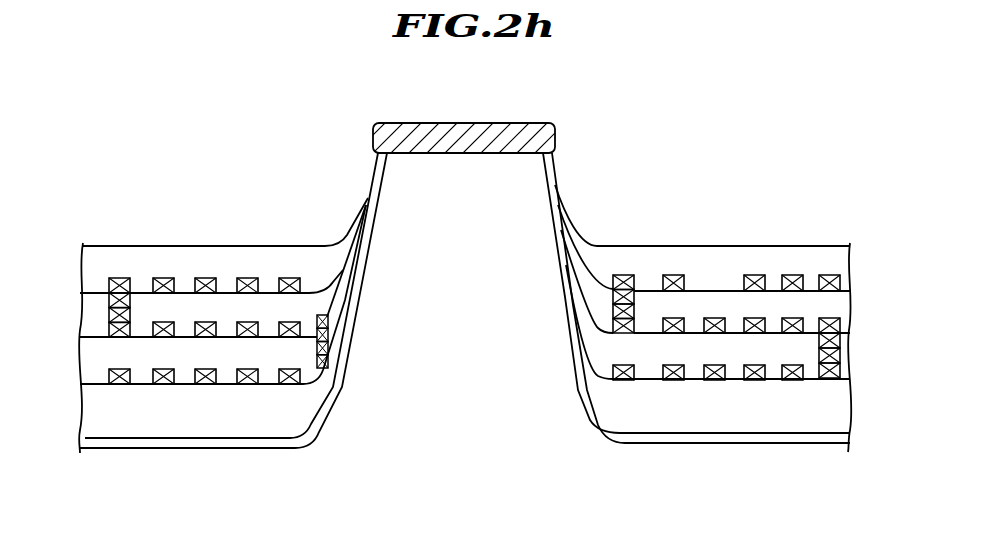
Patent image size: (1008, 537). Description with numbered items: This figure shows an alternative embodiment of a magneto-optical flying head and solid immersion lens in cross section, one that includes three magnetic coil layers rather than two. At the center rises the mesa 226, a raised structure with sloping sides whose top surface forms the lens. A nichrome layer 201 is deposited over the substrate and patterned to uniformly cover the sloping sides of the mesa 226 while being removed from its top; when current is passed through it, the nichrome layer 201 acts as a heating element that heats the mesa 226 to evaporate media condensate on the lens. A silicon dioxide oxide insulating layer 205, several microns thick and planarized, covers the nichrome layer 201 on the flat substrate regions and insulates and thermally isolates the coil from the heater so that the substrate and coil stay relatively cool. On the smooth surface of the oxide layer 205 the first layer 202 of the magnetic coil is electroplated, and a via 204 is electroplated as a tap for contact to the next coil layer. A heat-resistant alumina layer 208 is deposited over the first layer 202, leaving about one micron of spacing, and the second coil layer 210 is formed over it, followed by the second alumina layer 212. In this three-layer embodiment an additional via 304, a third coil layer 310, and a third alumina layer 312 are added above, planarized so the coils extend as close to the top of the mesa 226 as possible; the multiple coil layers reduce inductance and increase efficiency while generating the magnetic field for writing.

The mesa 226 is at (555, 181).
The nichrome layer 201 is at (560, 277).
The third alumina layer 312 is at (717, 245).
The third coil layer 310 is at (838, 274).
The second alumina layer 212 is at (655, 275).
The second coil layer 210 is at (722, 317).
The via 304 is at (613, 297).
The alumina layer 208 is at (596, 319).
The via 204 is at (838, 358).
The first layer of the magnetic coil 202 is at (713, 382).
The oxide insulating layer 205 is at (807, 382).